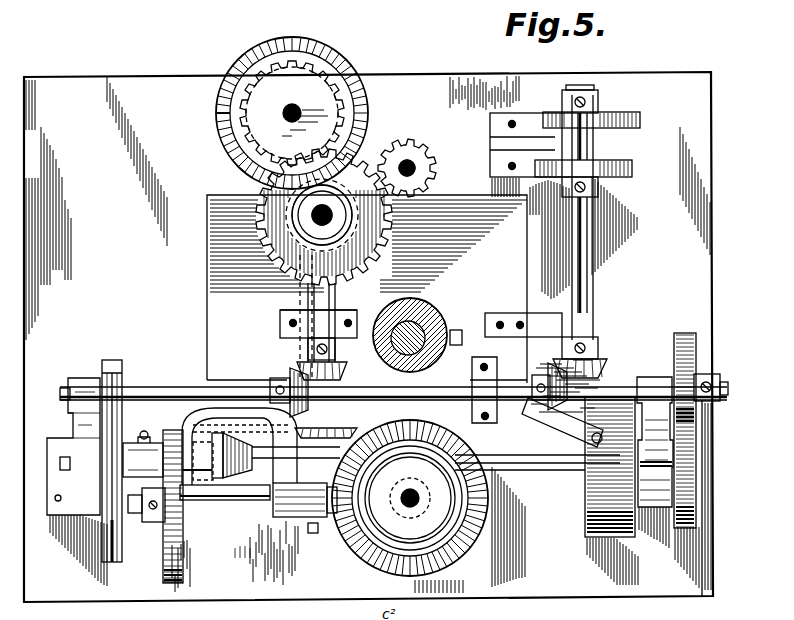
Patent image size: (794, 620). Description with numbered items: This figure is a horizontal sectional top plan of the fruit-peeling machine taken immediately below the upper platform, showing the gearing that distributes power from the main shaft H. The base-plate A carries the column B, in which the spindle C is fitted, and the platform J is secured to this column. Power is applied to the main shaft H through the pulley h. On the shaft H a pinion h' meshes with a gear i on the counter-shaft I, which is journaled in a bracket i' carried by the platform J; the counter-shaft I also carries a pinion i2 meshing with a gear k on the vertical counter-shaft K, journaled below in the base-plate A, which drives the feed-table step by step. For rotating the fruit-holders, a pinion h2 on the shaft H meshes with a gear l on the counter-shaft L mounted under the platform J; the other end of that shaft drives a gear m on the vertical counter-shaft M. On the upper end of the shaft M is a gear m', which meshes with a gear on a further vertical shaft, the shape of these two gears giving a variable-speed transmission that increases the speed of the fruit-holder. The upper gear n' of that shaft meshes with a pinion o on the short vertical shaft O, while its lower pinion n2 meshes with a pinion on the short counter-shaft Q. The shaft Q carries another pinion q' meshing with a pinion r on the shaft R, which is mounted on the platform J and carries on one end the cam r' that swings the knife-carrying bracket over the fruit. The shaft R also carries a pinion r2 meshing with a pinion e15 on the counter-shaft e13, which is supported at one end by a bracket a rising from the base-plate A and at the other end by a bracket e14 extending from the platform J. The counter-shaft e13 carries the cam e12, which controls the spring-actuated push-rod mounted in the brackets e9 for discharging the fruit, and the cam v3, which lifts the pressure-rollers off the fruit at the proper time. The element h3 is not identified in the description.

The base-plate A is at (78, 77).
The vertical counter-shaft M is at (300, 107).
The gear m is at (208, 123).
The gear m' is at (292, 113).
The gear n' is at (347, 298).
The pinion n2 is at (318, 220).
The vertical counter-shaft K is at (300, 225).
The short vertical shaft O is at (414, 155).
The pinion o is at (438, 160).
The platform J is at (208, 323).
The bracket a is at (520, 114).
The cam v3 is at (640, 116).
The cam e12 is at (632, 168).
The counter-shaft e13 is at (590, 297).
The bracket e14 is at (542, 346).
The pinion e15 is at (606, 356).
The pinion r2 is at (548, 370).
The bracket e9 is at (562, 422).
The shaft R is at (174, 388).
The cam r' is at (709, 451).
The pulley h is at (612, 457).
The main shaft H is at (50, 465).
The pulley h3 is at (108, 362).
The pinion h' is at (153, 495).
The counter-shaft I is at (238, 512).
The bracket i' is at (241, 463).
The pinion h2 is at (237, 478).
The gear i is at (182, 577).
The pinion i2 is at (340, 514).
The gear k is at (410, 498).
The column B is at (432, 306).
The spindle C is at (414, 303).
The short counter-shaft Q is at (342, 302).
The counter-shaft L is at (280, 302).
The pinion q' is at (333, 372).
The pinion r is at (280, 389).
The gear l is at (330, 429).